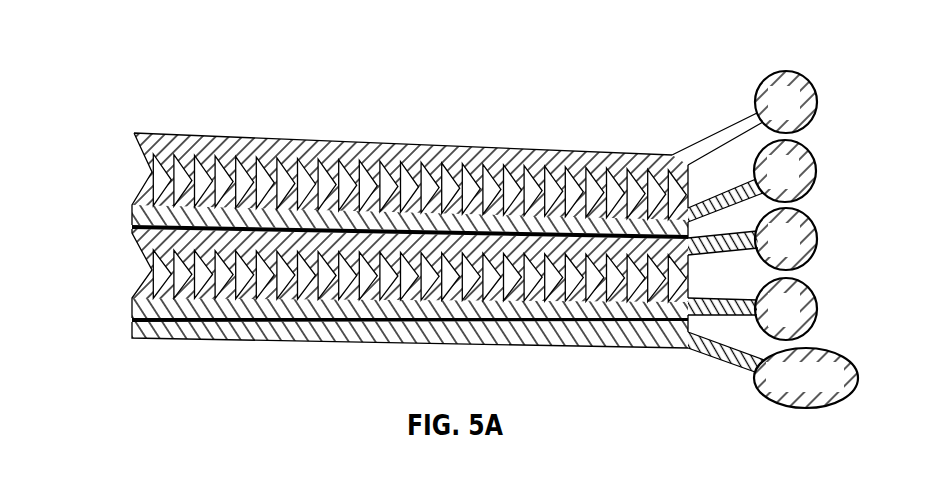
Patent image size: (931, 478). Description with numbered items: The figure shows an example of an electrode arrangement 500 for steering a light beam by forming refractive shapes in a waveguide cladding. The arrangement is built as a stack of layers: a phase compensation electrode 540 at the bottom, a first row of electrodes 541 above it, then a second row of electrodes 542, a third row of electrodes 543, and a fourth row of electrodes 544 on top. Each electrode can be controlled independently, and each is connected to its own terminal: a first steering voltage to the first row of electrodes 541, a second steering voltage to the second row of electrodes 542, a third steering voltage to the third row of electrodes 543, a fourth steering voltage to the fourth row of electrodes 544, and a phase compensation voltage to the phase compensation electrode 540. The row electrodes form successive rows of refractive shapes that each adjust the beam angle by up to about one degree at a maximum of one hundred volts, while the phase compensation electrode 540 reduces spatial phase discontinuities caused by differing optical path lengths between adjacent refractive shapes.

The electrode arrangement 500 is at (139, 44).
The fourth row of electrodes 544 is at (135, 143).
The third row of electrodes 543 is at (133, 215).
The second row of electrodes 542 is at (133, 234).
The first row of electrodes 541 is at (133, 307).
The phase compensation electrode 540 is at (173, 338).